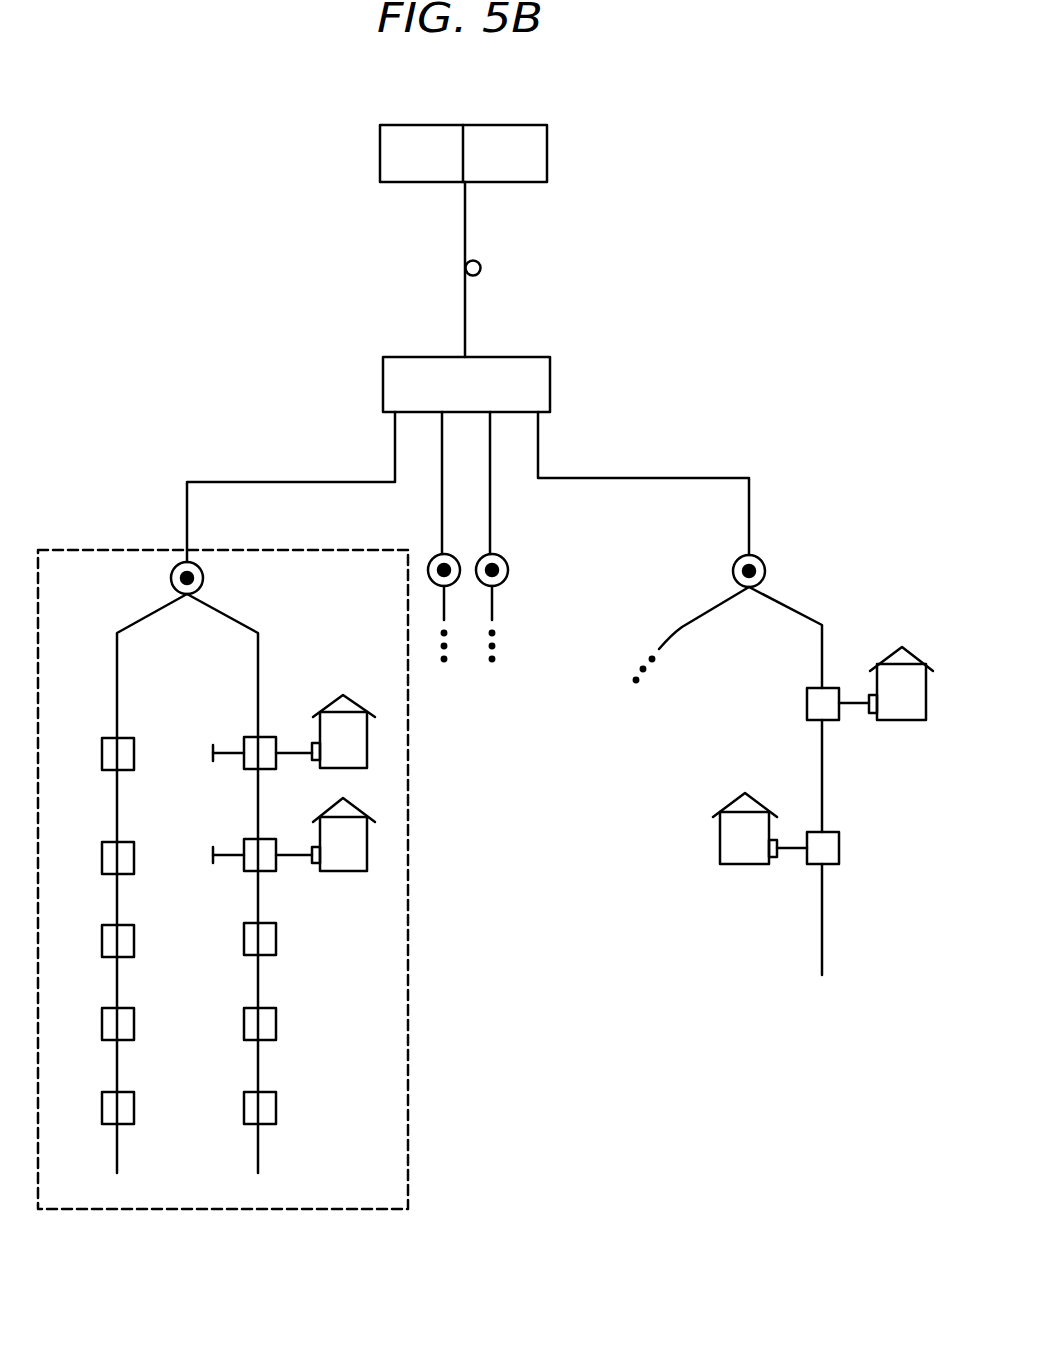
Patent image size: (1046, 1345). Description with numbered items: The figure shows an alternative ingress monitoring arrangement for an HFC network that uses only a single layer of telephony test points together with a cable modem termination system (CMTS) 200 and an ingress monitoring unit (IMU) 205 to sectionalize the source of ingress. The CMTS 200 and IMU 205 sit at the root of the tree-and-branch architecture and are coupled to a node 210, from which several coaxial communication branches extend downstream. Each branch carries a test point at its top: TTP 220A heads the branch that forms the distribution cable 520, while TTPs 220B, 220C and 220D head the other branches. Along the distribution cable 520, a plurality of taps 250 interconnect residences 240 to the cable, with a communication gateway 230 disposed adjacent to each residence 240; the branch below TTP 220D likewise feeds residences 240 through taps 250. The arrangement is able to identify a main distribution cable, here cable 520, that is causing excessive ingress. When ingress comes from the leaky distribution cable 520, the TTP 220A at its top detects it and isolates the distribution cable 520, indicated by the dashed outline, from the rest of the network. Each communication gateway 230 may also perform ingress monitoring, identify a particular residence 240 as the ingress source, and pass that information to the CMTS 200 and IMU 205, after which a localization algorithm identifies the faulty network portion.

The cable modem termination system (CMTS) 200 is at (469, 153).
The ingress monitoring unit (IMU) 205 is at (380, 150).
The node 210 is at (550, 383).
The telephony test point (TTP) 220A is at (203, 578).
The telephony test point (TTP) 220B is at (432, 558).
The telephony test point (TTP) 220C is at (505, 558).
The telephony test point (TTP) 220D is at (768, 566).
The communication gateway 230 is at (314, 866).
The residence 240 is at (901, 722).
The tap 250 is at (101, 738).
The distribution cable 520 is at (410, 990).